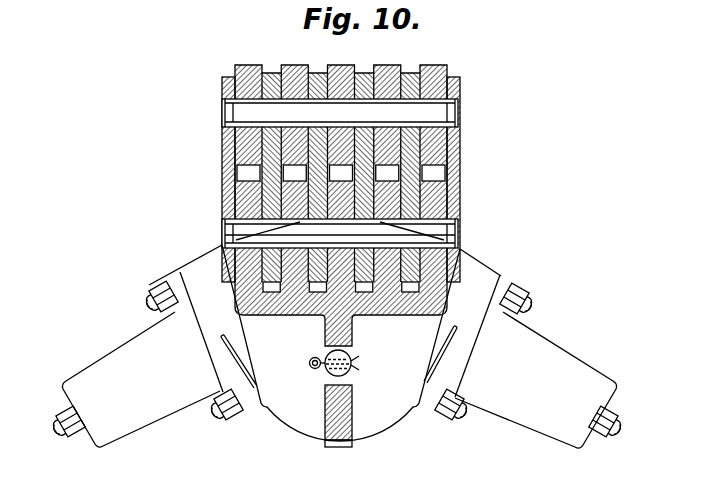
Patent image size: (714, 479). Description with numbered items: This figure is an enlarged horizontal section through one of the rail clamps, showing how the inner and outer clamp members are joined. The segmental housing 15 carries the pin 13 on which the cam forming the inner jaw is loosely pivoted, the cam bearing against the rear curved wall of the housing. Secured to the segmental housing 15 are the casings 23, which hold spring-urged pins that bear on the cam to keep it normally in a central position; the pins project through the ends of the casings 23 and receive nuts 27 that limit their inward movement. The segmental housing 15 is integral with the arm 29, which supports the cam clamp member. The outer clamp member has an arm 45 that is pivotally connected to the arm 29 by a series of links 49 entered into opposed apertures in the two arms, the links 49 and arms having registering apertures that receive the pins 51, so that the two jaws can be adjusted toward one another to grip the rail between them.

The pin 13 is at (335, 357).
The segmental housing 15 is at (372, 436).
The casing 23 is at (122, 352).
The nut 27 is at (62, 410).
The arm 29 is at (250, 203).
The arm 45 is at (299, 57).
The link 49 is at (268, 151).
The pin 51 is at (436, 101).